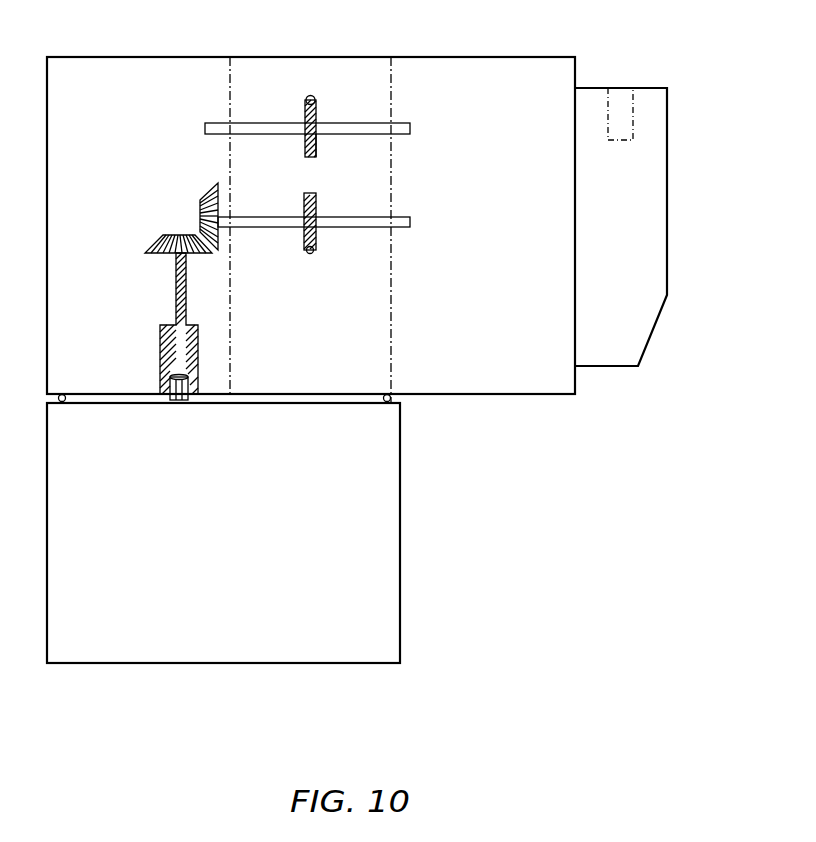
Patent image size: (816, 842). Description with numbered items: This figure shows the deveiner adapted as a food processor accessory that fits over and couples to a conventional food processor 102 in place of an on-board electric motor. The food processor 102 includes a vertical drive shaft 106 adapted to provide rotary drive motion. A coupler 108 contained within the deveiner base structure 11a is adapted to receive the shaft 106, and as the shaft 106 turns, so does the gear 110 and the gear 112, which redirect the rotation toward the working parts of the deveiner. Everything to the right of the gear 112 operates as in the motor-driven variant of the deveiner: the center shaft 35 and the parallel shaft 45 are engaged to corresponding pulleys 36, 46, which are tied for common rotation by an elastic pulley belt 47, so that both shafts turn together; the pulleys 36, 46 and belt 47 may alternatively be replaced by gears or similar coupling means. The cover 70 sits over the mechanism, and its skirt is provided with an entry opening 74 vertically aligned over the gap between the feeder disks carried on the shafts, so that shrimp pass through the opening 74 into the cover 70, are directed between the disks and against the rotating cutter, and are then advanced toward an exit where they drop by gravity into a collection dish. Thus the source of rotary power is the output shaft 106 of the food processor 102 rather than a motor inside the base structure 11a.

The base structure 11a is at (484, 395).
The cover 70 is at (665, 245).
The entry opening 74 is at (622, 90).
The parallel shaft 45 is at (350, 126).
The elastic pulley belt 47 is at (311, 96).
The pulley 46 is at (317, 146).
The center shaft 35 is at (340, 230).
The pulley 36 is at (303, 206).
The gear 112 is at (206, 196).
The gear 110 is at (155, 243).
The coupler 108 is at (160, 348).
The vertical drive shaft 106 is at (180, 401).
The food processor 102 is at (158, 664).